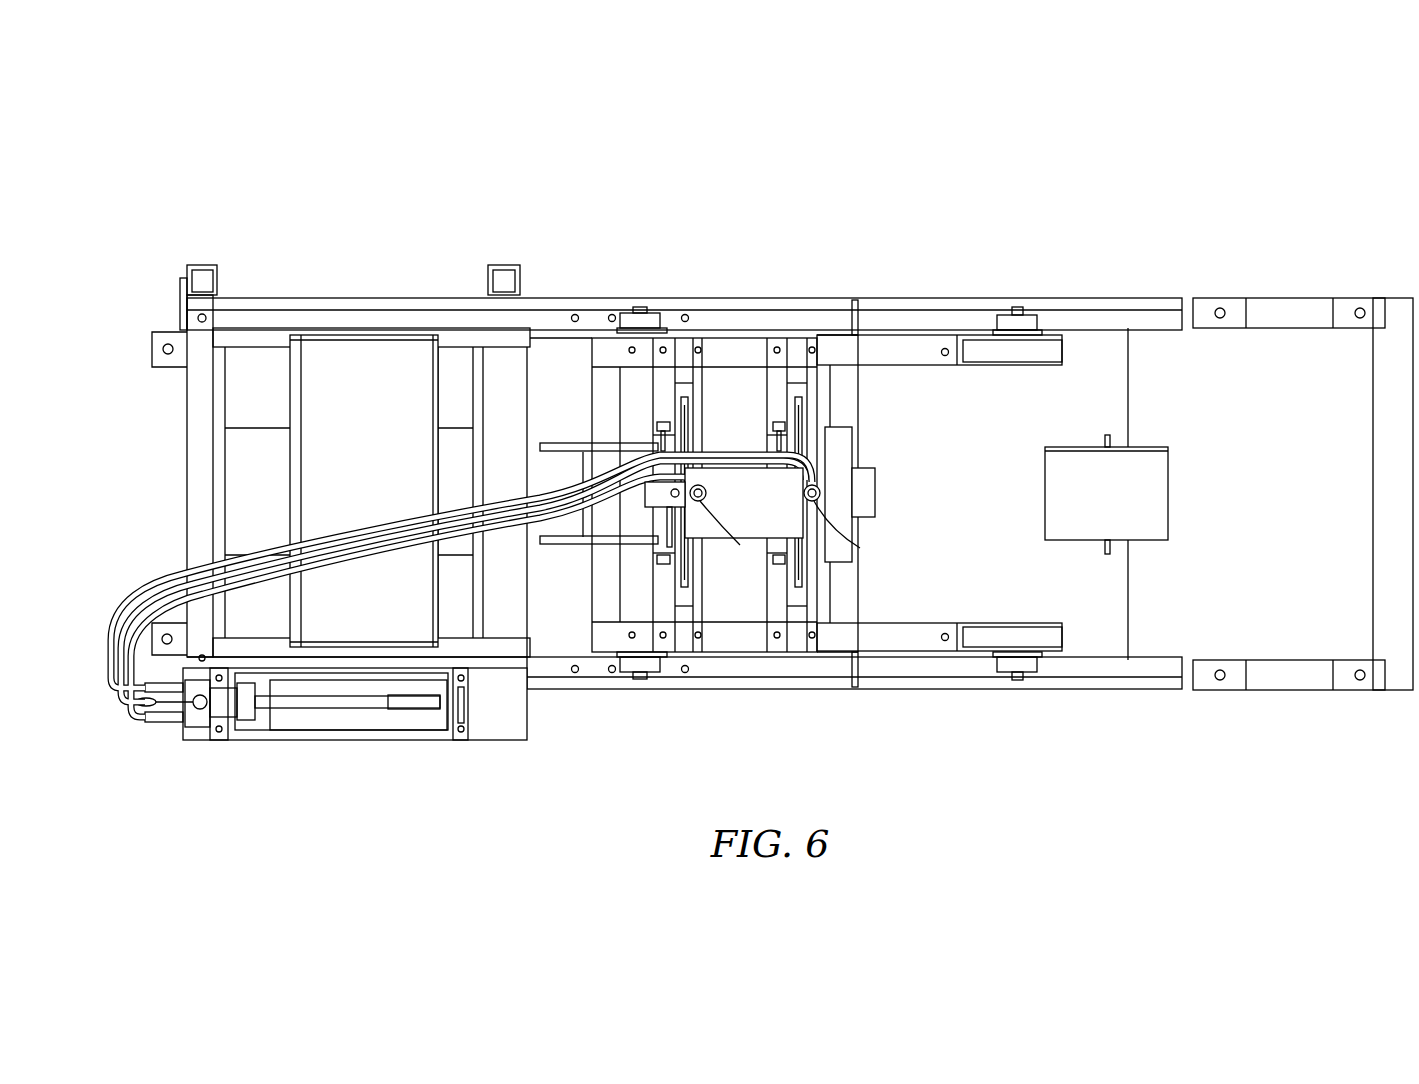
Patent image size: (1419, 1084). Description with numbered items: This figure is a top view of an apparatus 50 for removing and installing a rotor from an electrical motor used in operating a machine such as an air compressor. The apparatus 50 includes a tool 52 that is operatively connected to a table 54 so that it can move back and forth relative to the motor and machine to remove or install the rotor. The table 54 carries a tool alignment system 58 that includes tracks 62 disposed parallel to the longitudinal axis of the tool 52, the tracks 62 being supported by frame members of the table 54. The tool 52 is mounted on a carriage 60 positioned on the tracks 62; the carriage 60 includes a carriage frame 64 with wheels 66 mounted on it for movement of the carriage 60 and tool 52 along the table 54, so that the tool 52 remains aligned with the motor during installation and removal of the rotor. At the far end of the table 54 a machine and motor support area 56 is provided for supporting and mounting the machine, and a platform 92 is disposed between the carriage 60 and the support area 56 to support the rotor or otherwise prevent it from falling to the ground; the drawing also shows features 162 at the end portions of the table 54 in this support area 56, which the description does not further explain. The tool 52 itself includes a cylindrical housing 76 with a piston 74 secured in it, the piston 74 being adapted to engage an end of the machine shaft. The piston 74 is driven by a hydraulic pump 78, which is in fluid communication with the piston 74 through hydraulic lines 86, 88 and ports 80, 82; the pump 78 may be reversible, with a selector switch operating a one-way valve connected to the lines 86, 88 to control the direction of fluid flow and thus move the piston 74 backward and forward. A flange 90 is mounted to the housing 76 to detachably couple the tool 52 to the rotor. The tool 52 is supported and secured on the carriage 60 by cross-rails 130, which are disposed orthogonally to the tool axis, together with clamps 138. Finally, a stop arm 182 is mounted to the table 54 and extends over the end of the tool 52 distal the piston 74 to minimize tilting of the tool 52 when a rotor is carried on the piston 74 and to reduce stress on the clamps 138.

The apparatus 50 is at (900, 172).
The tool 52 is at (733, 418).
The table 54 is at (618, 268).
The machine and motor support area 56 is at (1330, 270).
The tool alignment system 58 is at (1150, 300).
The carriage 60 is at (950, 414).
The tracks 62 is at (938, 317).
The carriage frame 64 is at (927, 623).
The wheels 66 is at (1037, 322).
The piston 74 is at (875, 492).
The cylindrical housing 76 is at (735, 510).
The hydraulic pump 78 is at (335, 753).
The port 80 is at (700, 525).
The port 82 is at (818, 503).
The hydraulic line 86 is at (383, 510).
The hydraulic line 88 is at (357, 547).
The flange 90 is at (840, 422).
The platform 92 is at (1170, 492).
The cross-rails 130 is at (663, 620).
The clamps 138 is at (800, 517).
The mounting holes 162 is at (1343, 317).
The stop arm 182 is at (558, 443).